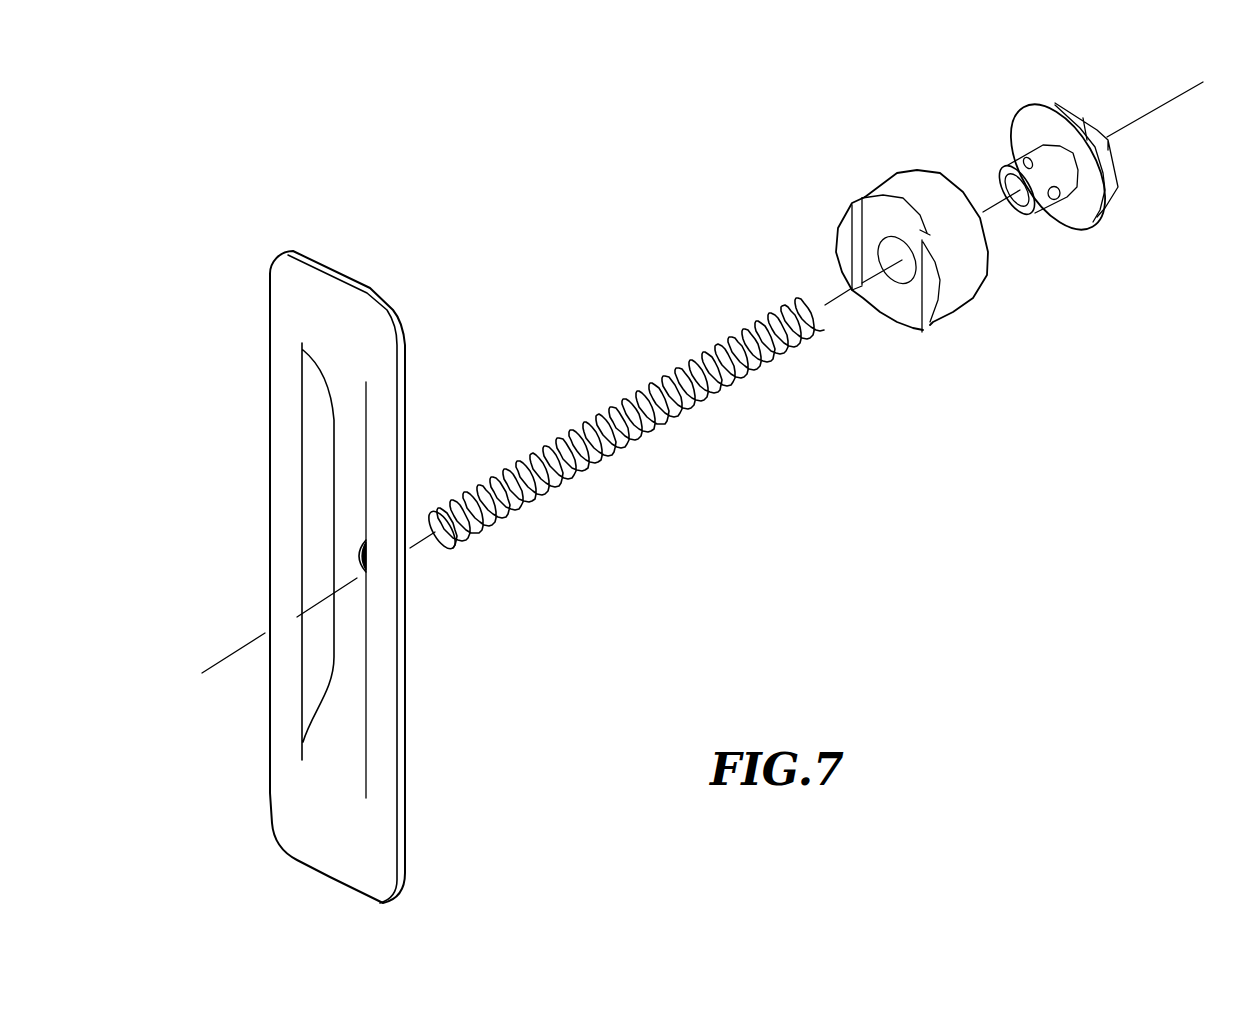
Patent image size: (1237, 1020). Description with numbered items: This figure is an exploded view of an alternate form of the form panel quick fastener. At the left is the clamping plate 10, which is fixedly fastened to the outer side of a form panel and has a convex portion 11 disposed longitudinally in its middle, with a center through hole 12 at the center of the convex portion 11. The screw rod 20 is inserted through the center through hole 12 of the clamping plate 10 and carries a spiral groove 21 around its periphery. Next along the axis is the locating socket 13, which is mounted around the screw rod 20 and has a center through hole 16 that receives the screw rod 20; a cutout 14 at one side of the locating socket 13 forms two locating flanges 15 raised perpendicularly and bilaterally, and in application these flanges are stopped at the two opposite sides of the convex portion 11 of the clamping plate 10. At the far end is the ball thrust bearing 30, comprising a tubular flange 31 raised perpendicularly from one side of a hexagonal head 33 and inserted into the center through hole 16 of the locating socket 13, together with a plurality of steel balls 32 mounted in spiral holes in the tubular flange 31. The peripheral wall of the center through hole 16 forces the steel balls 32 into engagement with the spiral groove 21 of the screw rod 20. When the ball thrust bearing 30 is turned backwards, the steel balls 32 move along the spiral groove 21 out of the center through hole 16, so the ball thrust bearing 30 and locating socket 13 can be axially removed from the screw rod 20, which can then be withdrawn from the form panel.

The clamping plate 10 is at (387, 638).
The convex portion 11 is at (343, 510).
The center through hole 12 is at (368, 558).
The locating socket 13 is at (970, 290).
The cutout 14 is at (913, 308).
The locating flanges 15 is at (837, 237).
The center through hole 16 is at (903, 278).
The screw rod 20 is at (508, 497).
The spiral groove 21 is at (488, 527).
The ball thrust bearing 30 is at (1068, 143).
The tubular flange 31 is at (1043, 152).
The steel balls 32 is at (1055, 198).
The hexagonal head 33 is at (1108, 158).